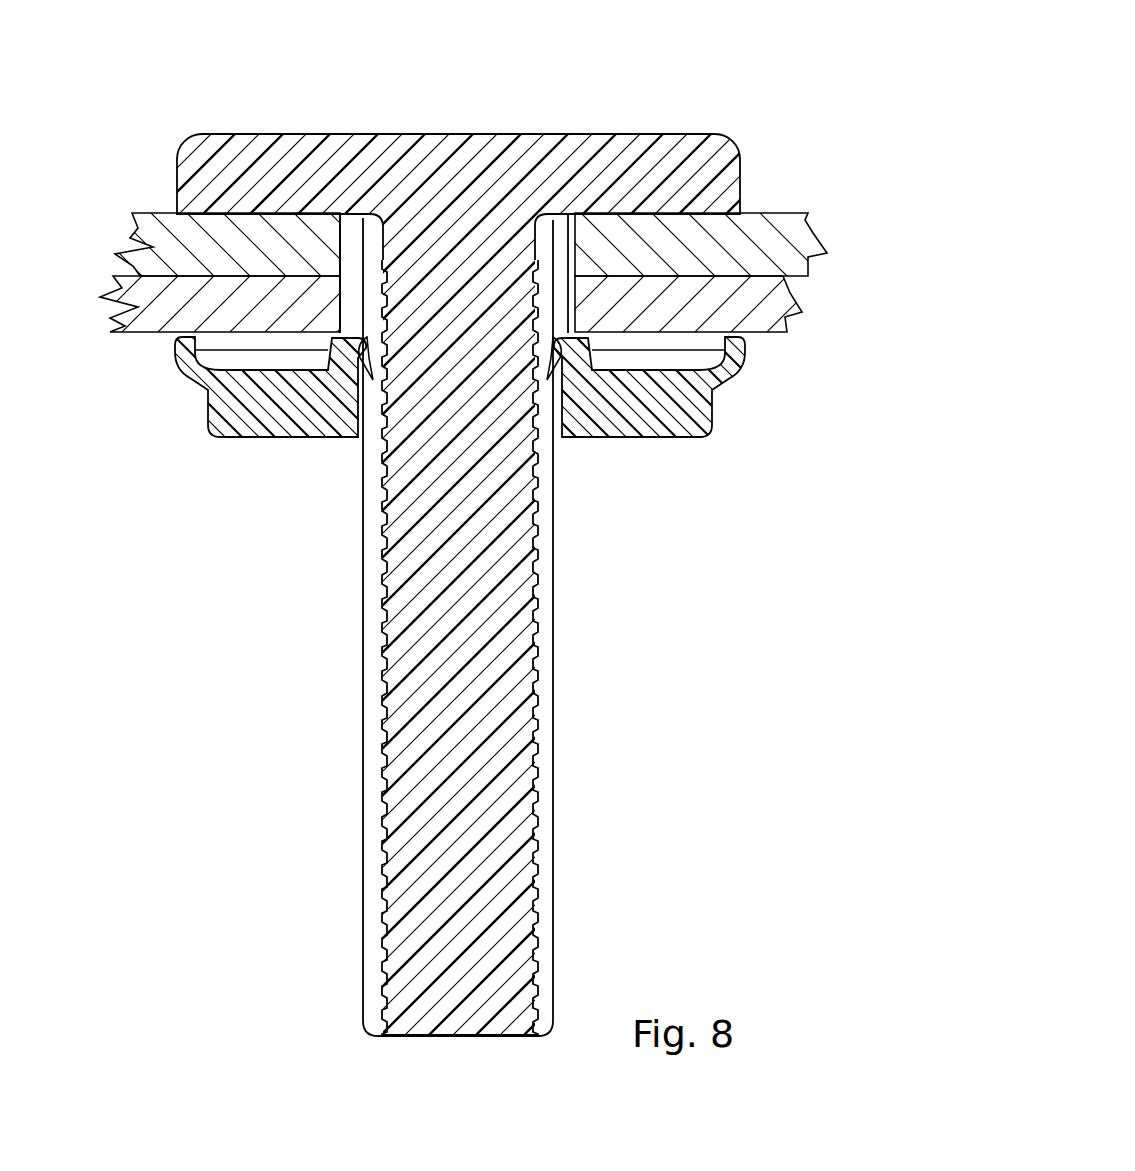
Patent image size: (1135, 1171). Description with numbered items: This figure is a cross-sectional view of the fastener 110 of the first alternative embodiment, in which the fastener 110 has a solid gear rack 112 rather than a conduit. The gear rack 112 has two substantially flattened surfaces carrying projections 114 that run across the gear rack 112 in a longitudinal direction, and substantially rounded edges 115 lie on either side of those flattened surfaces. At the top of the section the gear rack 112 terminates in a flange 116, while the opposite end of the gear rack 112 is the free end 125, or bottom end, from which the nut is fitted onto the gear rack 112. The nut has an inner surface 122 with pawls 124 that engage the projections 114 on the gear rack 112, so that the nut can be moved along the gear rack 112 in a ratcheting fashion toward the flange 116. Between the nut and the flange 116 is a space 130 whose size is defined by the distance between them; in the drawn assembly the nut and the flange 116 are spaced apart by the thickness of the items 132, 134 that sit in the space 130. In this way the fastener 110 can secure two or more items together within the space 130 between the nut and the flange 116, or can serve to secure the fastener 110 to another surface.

The fastener 110 is at (690, 70).
The gear rack 112 is at (507, 575).
The projections 114 is at (537, 628).
The rounded edges 115 is at (550, 915).
The flange 116 is at (740, 153).
The inner surface 122 is at (732, 377).
The pawls 124 is at (373, 352).
The free end 125 is at (452, 1037).
The space 130 is at (562, 246).
The item 132 is at (773, 327).
The item 134 is at (775, 220).